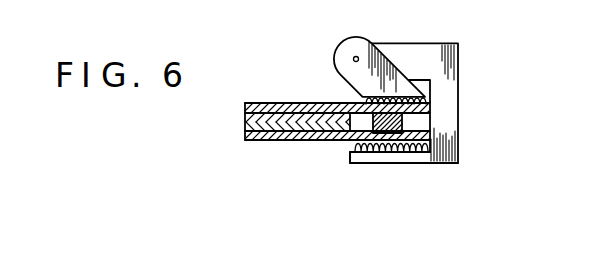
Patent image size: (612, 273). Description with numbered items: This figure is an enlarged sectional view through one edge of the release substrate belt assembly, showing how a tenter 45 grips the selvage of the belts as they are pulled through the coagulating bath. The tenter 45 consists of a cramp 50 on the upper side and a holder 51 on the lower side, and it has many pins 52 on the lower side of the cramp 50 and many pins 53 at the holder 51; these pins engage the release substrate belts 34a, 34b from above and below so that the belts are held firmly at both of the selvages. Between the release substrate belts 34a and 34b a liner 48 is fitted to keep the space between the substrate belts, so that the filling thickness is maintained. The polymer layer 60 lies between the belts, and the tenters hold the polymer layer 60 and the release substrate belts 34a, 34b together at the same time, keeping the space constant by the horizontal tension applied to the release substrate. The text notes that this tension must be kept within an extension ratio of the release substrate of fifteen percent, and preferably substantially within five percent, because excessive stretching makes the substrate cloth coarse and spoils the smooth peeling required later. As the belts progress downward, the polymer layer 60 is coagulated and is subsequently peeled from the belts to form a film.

The release substrate belt 34a is at (294, 103).
The release substrate belt 34b is at (289, 141).
The tenter 45 is at (466, 93).
The liner 48 is at (403, 122).
The cramp 50 is at (345, 47).
The holder 51 is at (371, 157).
The pins 52 is at (425, 96).
The pins 53 is at (415, 147).
The polymer layer 60 is at (310, 125).